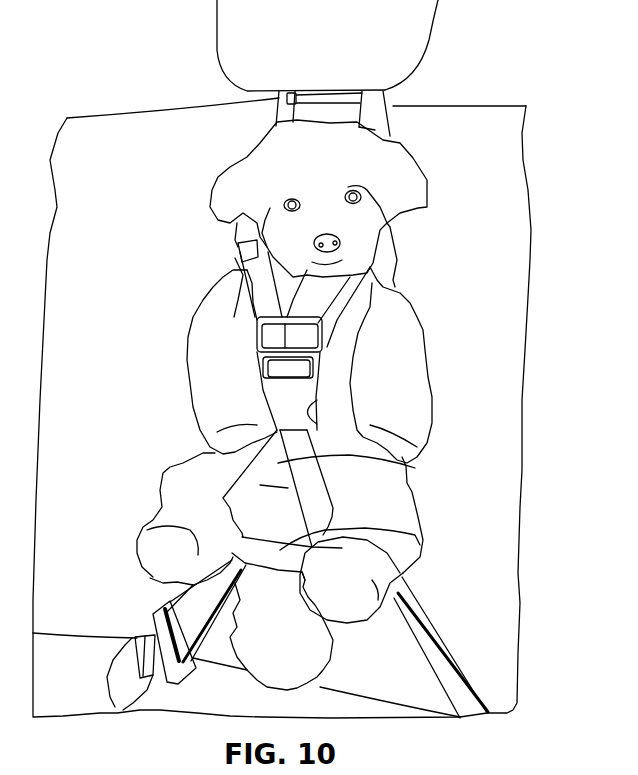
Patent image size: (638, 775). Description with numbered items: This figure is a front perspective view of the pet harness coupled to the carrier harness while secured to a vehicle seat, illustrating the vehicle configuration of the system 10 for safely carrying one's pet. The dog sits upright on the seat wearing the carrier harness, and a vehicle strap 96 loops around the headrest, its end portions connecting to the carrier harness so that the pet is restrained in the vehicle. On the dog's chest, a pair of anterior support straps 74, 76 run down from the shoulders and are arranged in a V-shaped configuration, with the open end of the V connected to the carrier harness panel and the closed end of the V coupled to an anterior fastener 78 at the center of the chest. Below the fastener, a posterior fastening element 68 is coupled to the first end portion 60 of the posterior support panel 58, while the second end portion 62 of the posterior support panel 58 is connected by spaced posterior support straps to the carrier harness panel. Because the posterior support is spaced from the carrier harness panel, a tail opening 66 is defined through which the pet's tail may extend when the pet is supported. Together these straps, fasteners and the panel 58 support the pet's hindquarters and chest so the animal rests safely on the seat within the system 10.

The system 10 is at (499, 197).
The posterior support panel 58 is at (292, 590).
The first end portion 60 is at (410, 473).
The second end portion 62 is at (410, 540).
The tail opening 66 is at (313, 615).
The posterior fastening element 68 is at (288, 395).
The anterior support strap 74 is at (260, 283).
The anterior support strap 76 is at (347, 302).
The anterior fastener 78 is at (297, 368).
The vehicle strap 96 is at (381, 110).